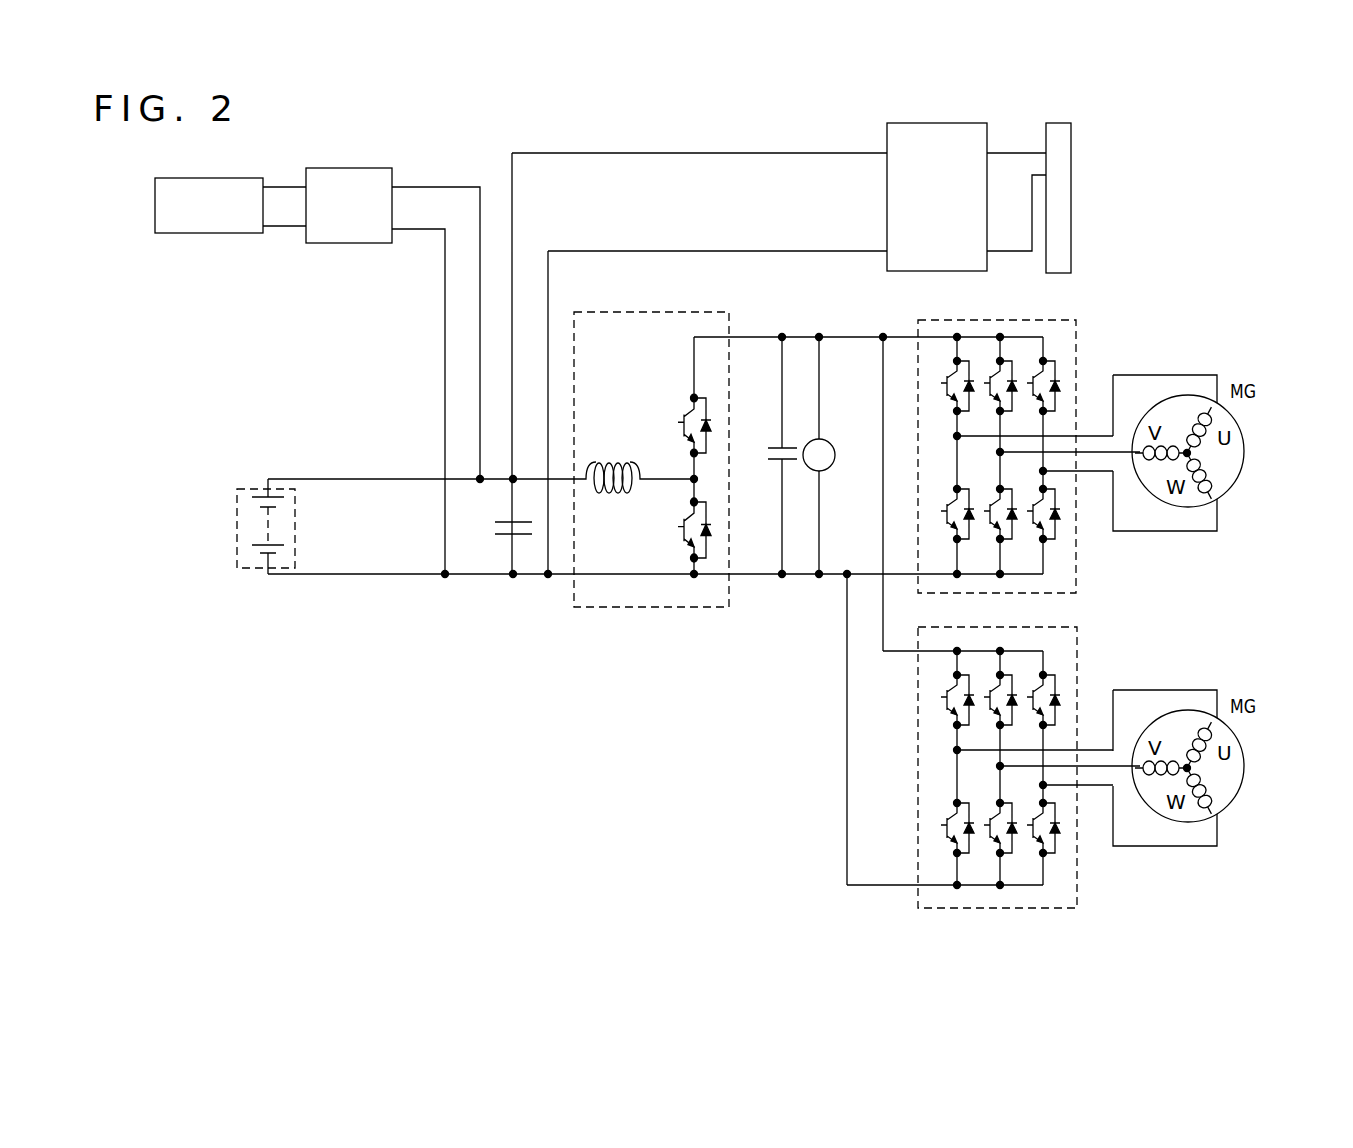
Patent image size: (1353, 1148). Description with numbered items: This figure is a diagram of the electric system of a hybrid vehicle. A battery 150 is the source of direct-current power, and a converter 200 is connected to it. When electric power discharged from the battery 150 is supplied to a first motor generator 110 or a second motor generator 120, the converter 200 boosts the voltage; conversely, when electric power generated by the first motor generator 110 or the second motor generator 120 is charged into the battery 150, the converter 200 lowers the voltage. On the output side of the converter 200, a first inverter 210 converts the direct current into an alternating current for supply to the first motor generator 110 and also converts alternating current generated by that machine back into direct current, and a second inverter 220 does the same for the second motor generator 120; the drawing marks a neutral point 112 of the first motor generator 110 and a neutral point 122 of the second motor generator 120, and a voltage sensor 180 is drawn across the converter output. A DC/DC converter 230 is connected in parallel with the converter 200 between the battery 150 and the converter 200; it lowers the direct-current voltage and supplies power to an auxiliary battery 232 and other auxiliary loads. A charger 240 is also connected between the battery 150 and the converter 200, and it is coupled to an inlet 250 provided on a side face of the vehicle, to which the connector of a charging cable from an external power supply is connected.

The first motor generator 110 is at (1236, 489).
The neutral point of first motor generator 112 is at (1187, 452).
The second motor generator 120 is at (1236, 804).
The neutral point of second motor generator 122 is at (1187, 767).
The battery 150 is at (253, 488).
The voltage sensor 180 is at (833, 469).
The converter 200 is at (708, 312).
The first inverter 210 is at (1076, 545).
The second inverter 220 is at (1076, 859).
The DC/DC converter 230 is at (352, 245).
The auxiliary battery 232 is at (210, 235).
The charger 240 is at (887, 190).
The inlet 250 is at (1071, 200).